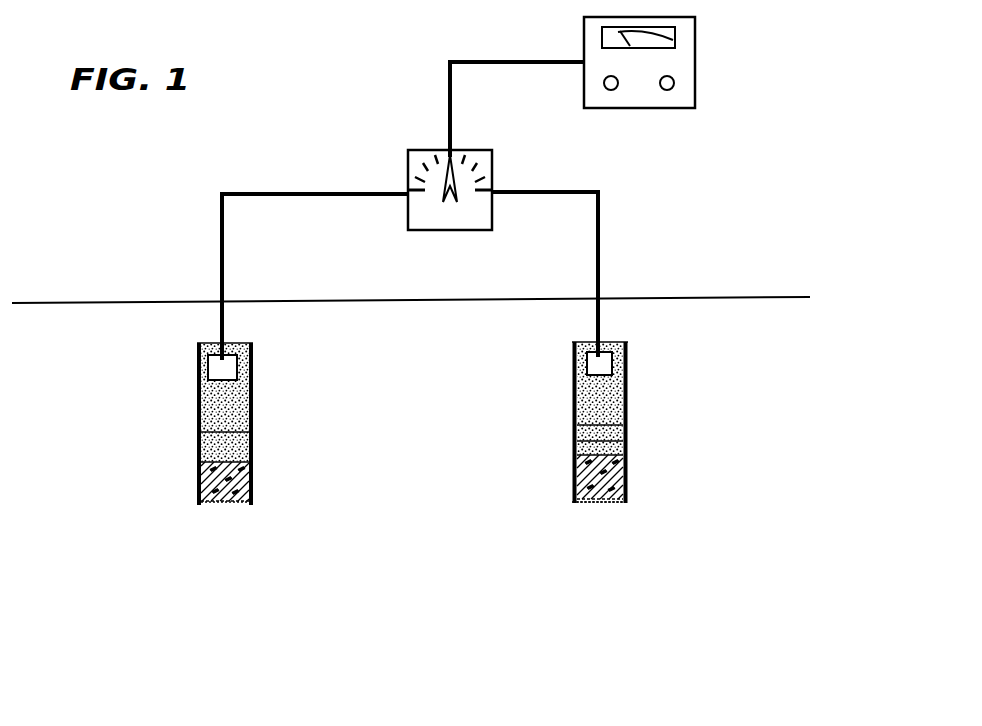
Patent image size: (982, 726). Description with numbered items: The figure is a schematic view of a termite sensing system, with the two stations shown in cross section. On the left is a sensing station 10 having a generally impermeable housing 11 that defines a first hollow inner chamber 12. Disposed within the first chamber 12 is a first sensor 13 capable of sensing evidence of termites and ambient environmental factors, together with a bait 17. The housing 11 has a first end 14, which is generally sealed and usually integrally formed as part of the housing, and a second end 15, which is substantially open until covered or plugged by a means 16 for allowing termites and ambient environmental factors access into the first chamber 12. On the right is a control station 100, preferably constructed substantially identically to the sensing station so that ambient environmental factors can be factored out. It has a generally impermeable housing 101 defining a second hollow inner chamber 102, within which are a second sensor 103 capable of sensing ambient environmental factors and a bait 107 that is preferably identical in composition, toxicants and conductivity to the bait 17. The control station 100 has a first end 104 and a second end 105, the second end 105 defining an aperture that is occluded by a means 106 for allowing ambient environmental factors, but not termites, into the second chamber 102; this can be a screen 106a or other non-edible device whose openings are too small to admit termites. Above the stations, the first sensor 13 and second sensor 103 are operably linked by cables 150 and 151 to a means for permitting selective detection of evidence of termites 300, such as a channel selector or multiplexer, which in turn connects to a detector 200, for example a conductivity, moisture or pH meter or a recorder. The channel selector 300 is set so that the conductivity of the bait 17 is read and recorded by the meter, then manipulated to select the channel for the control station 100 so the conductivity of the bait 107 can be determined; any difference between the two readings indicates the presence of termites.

The sensing station 10 is at (172, 382).
The generally impermeable housing 11 is at (252, 395).
The first hollow inner chamber 12 is at (238, 428).
The first sensor 13 is at (232, 364).
The first end 14 is at (240, 344).
The second end 15 is at (253, 505).
The means for allowing termites and ambient environmental factors access 16 is at (222, 505).
The bait 17 is at (199, 442).
The control station 100 is at (550, 380).
The generally impermeable housing 101 is at (628, 410).
The second hollow inner chamber 102 is at (628, 441).
The second sensor 103 is at (604, 362).
The first end 104 is at (620, 343).
The second end 105 is at (628, 499).
The means for allowing ambient environmental factors but not termites access 106 is at (577, 479).
The screen 106a is at (598, 503).
The bait 107 is at (577, 425).
The cable 150 is at (318, 193).
The cable 151 is at (541, 192).
The detector 200 is at (695, 80).
The means for permitting selective detection of evidence of termites 300 is at (408, 164).